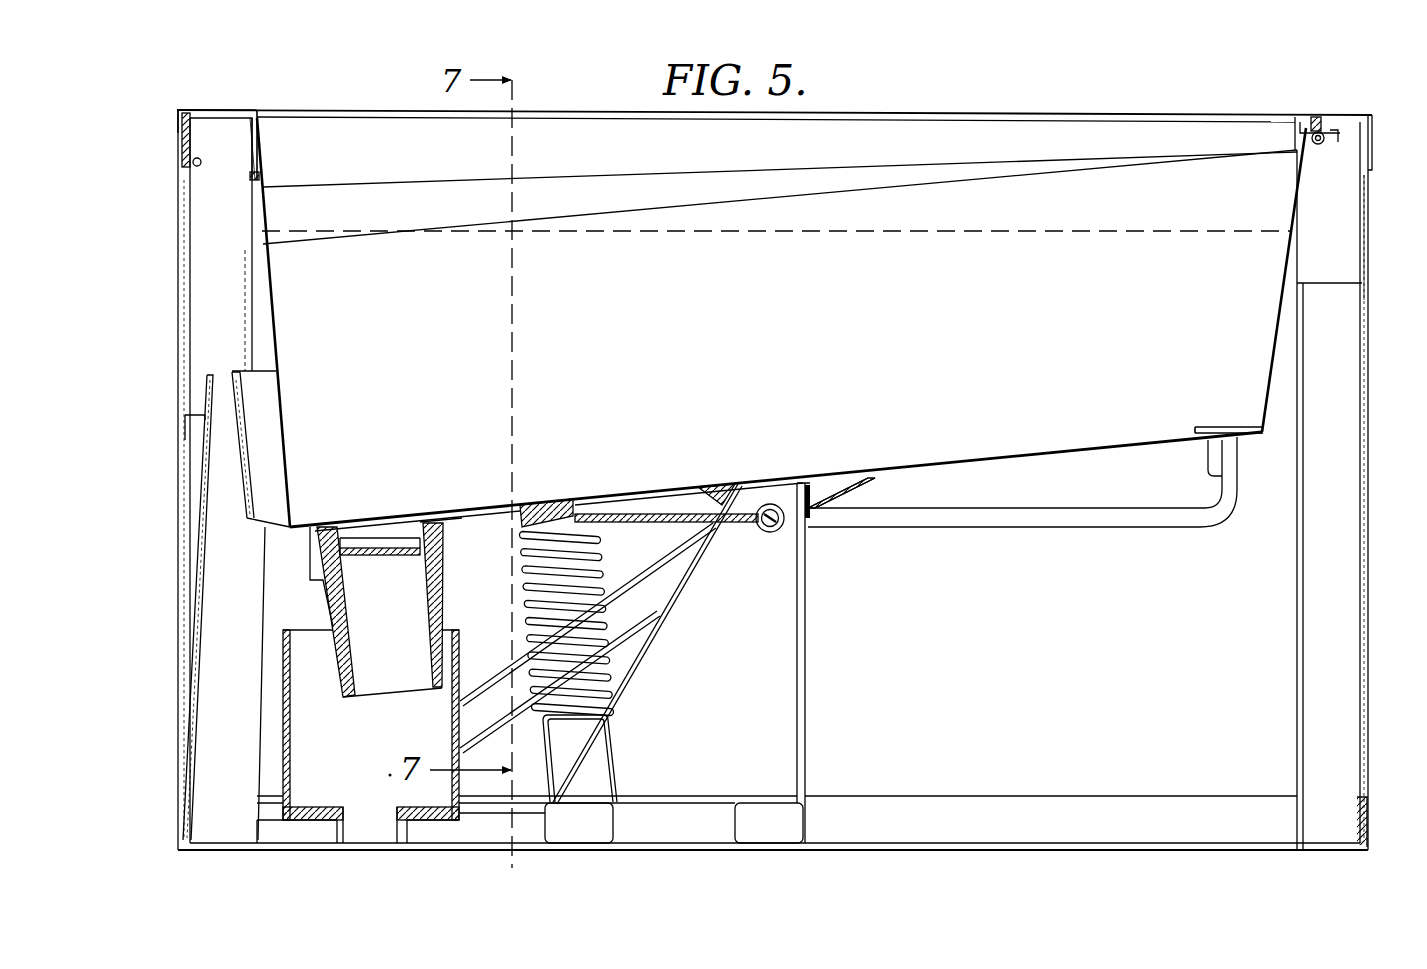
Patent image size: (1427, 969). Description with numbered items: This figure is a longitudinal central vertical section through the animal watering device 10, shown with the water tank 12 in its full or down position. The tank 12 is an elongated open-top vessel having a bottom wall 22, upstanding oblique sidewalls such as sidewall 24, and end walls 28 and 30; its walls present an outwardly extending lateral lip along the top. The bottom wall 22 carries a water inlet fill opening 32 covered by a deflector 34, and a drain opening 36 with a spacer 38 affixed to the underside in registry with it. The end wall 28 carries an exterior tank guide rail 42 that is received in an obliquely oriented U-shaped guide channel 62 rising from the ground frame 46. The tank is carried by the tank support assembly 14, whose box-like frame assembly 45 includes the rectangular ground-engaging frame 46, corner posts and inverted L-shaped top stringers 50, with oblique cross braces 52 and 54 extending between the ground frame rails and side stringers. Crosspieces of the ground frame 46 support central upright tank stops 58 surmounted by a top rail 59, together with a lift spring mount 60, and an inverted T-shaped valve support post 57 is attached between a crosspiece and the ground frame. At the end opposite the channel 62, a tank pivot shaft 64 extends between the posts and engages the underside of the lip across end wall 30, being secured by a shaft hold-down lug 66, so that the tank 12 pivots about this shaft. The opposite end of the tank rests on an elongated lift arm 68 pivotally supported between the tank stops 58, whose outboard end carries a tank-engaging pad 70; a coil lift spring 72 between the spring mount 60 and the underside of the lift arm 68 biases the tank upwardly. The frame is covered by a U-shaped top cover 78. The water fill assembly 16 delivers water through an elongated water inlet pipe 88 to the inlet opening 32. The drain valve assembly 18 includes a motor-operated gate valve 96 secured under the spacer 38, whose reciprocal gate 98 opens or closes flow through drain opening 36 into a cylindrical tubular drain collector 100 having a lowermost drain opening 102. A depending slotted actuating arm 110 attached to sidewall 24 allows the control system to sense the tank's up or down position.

The animal watering device 10 is at (1068, 100).
The water tank 12 is at (1255, 447).
The tank support assembly 14 is at (1386, 748).
The water fill assembly 16 is at (914, 540).
The drain valve assembly 18 is at (318, 598).
The bottom wall 22 is at (917, 456).
The sidewall 24 is at (849, 326).
The end wall 28 is at (273, 298).
The end wall 30 is at (1280, 308).
The water inlet fill opening 32 is at (1208, 468).
The deflector 34 is at (1210, 425).
The drain opening 36 is at (408, 520).
The spacer 38 is at (443, 520).
The tank guide rail 42 is at (262, 386).
The frame assembly 45 is at (1294, 664).
The ground frame 46 is at (1078, 796).
The top stringers 50 is at (191, 140).
The cross brace 52 is at (625, 615).
The cross brace 54 is at (728, 495).
The valve support post 57 is at (487, 828).
The tank stops 58 is at (805, 673).
The top rail 59 is at (822, 478).
The lift spring mount 60 is at (612, 752).
The guide channel 62 is at (223, 372).
The tank pivot shaft 64 is at (1320, 145).
The shaft hold-down lug 66 is at (1316, 118).
The lift arm 68 is at (730, 524).
The tank-engaging pad 70 is at (538, 504).
The coil lift spring 72 is at (600, 553).
The top cover 78 is at (218, 110).
The water inlet pipe 88 is at (1107, 527).
The gate valve 96 is at (440, 582).
The gate 98 is at (372, 548).
The drain collector 100 is at (298, 716).
The drain opening 102 is at (372, 822).
The actuating arm 110 is at (305, 568).